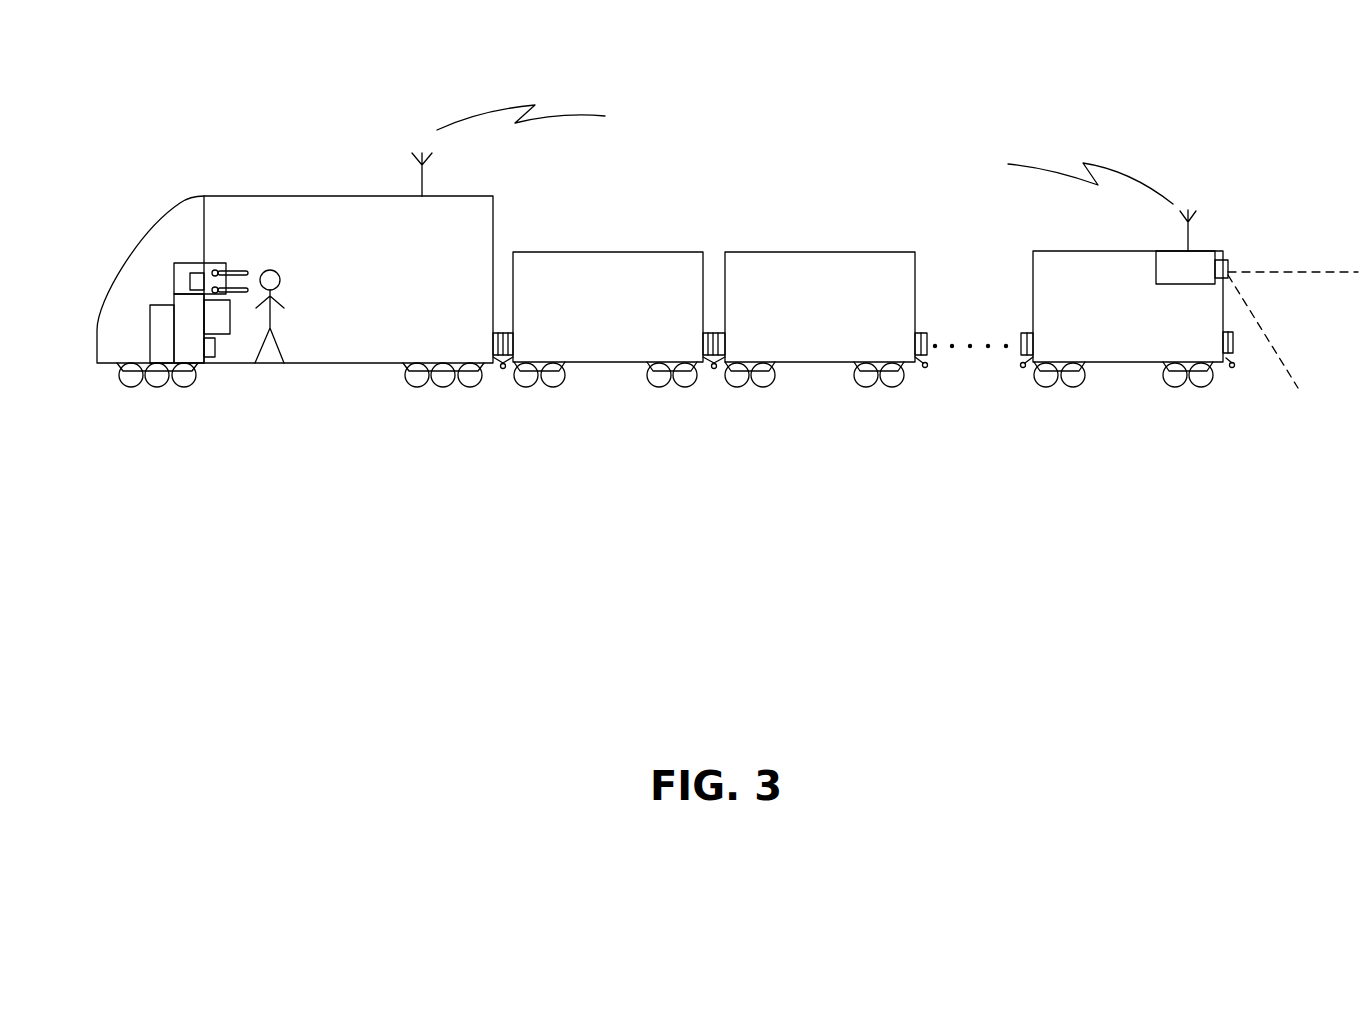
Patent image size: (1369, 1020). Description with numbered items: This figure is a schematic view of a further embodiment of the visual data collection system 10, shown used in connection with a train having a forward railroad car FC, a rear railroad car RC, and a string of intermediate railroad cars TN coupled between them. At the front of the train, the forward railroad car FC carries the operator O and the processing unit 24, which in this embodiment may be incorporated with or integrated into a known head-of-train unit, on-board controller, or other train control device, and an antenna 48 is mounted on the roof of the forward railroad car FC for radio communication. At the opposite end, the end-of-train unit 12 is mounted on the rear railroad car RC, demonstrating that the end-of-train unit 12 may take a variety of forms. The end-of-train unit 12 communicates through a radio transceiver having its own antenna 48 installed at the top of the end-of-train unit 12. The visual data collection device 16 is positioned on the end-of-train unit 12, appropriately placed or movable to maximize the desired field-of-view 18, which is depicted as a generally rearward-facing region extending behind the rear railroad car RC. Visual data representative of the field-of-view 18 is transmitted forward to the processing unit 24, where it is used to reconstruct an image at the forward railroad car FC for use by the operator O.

The visual data collection system 10 is at (846, 170).
The end-of-train unit 12 is at (1171, 250).
The visual data collection device 16 is at (1228, 263).
The field-of-view 18 is at (1272, 348).
The processing unit 24 is at (236, 228).
The antenna 48 is at (425, 175).
The train cars TN is at (668, 222).
The forward railroad car FC is at (322, 365).
The rear railroad car RC is at (1133, 362).
The operator O is at (266, 322).